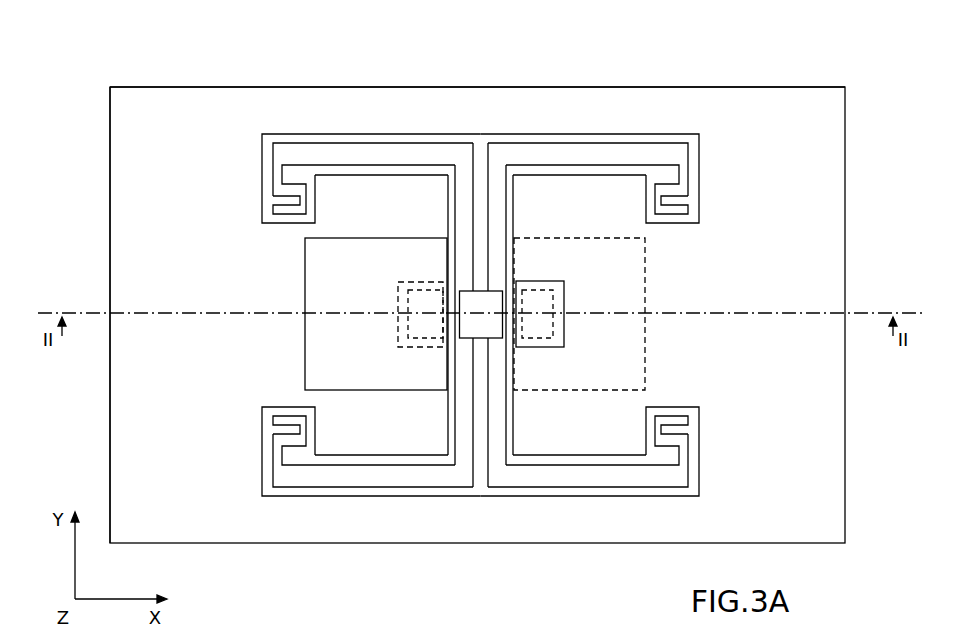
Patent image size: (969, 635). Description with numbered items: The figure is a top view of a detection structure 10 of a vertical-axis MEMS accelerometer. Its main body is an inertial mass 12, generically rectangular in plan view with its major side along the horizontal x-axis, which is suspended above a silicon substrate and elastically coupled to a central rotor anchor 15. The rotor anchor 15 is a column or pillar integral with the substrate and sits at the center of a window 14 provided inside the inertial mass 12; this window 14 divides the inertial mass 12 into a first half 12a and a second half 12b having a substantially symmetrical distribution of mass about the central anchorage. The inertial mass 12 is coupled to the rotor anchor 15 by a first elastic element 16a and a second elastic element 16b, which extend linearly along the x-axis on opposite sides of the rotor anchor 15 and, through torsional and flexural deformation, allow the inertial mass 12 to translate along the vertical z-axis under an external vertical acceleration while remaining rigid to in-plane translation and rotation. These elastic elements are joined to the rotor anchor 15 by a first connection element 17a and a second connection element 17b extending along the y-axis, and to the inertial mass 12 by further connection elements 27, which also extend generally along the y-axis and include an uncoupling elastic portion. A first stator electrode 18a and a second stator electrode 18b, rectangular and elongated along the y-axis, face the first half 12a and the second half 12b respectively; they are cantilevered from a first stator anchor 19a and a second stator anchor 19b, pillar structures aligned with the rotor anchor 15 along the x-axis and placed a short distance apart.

The detection structure 10 is at (855, 99).
The inertial mass 12 is at (847, 163).
The first half of the inertial mass 12a is at (182, 197).
The second half of the inertial mass 12b is at (752, 108).
The window 14 is at (461, 202).
The rotor anchor 15 is at (487, 303).
The first elastic element 16a is at (368, 150).
The second elastic element 16b is at (403, 490).
The first connection element 17a is at (481, 178).
The second connection element 17b is at (479, 436).
The first stator electrode 18a is at (310, 357).
The second stator electrode 18b is at (617, 357).
The first stator anchor 19a is at (420, 345).
The second stator anchor 19b is at (540, 330).
The connection elements 27 is at (268, 204).